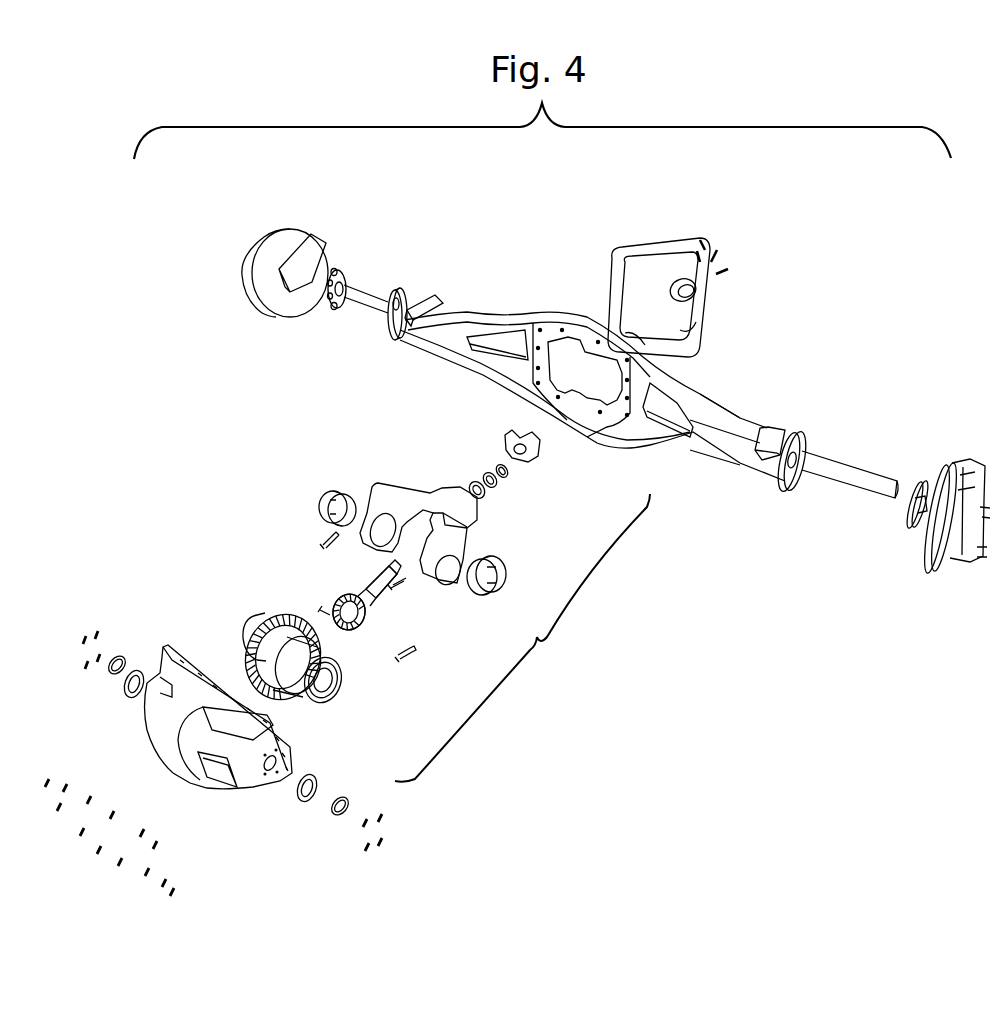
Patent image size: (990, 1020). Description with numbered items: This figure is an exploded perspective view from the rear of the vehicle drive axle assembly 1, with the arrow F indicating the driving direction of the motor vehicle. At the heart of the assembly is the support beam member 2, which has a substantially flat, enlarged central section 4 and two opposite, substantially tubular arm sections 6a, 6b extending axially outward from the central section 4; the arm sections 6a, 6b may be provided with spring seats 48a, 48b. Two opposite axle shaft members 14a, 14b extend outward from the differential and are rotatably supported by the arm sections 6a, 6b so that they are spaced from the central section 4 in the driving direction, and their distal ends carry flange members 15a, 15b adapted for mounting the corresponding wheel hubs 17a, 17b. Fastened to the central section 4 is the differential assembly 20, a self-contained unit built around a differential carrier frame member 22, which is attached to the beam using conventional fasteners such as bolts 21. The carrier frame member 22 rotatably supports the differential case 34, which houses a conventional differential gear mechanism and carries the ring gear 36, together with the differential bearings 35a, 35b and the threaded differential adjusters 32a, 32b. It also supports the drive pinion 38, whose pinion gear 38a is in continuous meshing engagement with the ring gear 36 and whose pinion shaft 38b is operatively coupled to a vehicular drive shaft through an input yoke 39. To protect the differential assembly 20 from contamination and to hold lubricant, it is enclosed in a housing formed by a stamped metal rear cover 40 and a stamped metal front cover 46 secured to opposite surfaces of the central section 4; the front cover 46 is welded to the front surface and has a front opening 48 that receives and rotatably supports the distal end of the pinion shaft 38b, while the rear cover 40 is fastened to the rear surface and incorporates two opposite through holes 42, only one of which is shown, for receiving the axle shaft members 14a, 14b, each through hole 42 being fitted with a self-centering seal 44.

The vehicle drive axle assembly 1 is at (527, 245).
The support beam member 2 is at (570, 294).
The enlarged central section 4 is at (680, 372).
The arm section 6a is at (797, 424).
The arm section 6b is at (420, 284).
The axle shaft member 14a is at (829, 457).
The axle shaft member 14b is at (370, 297).
The flange member 15a is at (926, 478).
The flange member 15b is at (331, 310).
The wheel hub 17a is at (942, 563).
The wheel hub 17b is at (263, 313).
The differential assembly 20 is at (522, 638).
The bolt 21 is at (414, 656).
The differential carrier frame member 22 is at (406, 482).
The threaded differential adjuster 32a is at (508, 574).
The threaded differential adjuster 32b is at (319, 499).
The differential case 34 is at (296, 708).
The differential bearing 35a is at (335, 694).
The differential bearing 35b is at (248, 643).
The ring gear 36 is at (290, 612).
The drive pinion 38 is at (389, 610).
The pinion gear 38a is at (357, 632).
The pinion shaft 38b is at (378, 578).
The input yoke 39 is at (541, 453).
The rear cover 40 is at (182, 790).
The through hole 42 is at (272, 775).
The self-centering seal 44 is at (130, 700).
The front cover 46 is at (713, 285).
The front opening 48 is at (681, 286).
The spring seat 48a is at (773, 426).
The spring seat 48b is at (438, 294).